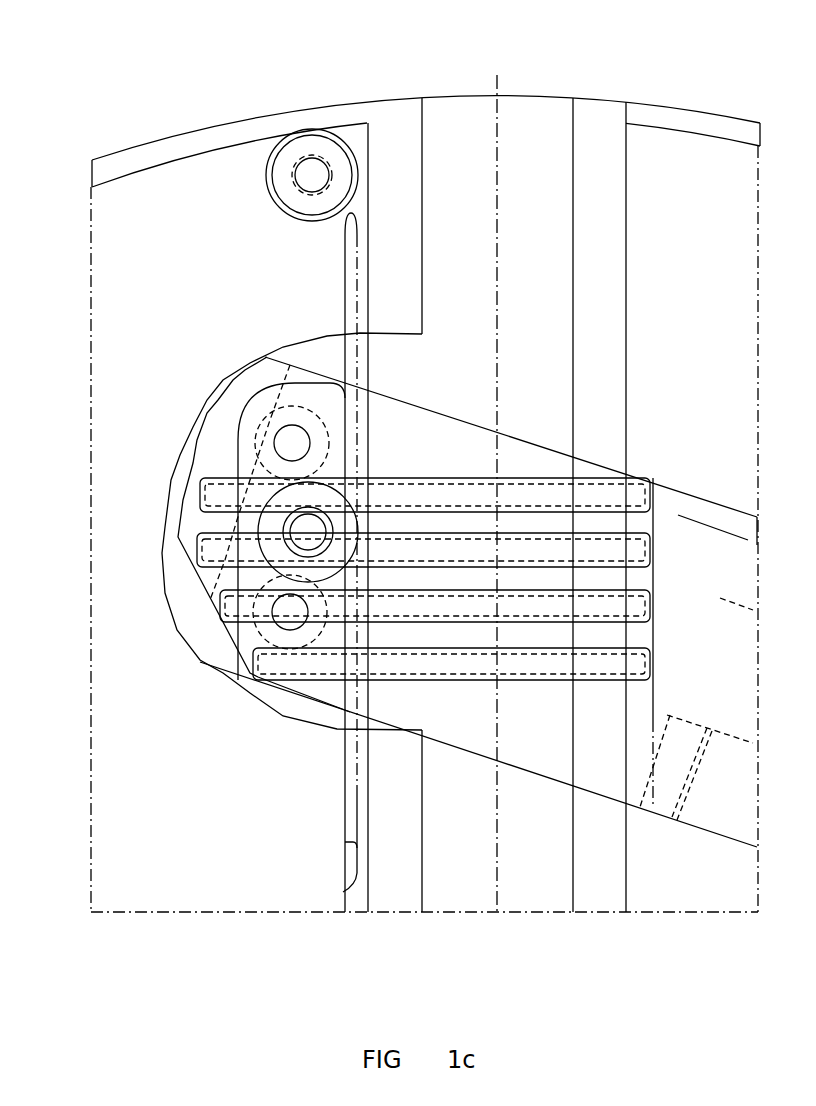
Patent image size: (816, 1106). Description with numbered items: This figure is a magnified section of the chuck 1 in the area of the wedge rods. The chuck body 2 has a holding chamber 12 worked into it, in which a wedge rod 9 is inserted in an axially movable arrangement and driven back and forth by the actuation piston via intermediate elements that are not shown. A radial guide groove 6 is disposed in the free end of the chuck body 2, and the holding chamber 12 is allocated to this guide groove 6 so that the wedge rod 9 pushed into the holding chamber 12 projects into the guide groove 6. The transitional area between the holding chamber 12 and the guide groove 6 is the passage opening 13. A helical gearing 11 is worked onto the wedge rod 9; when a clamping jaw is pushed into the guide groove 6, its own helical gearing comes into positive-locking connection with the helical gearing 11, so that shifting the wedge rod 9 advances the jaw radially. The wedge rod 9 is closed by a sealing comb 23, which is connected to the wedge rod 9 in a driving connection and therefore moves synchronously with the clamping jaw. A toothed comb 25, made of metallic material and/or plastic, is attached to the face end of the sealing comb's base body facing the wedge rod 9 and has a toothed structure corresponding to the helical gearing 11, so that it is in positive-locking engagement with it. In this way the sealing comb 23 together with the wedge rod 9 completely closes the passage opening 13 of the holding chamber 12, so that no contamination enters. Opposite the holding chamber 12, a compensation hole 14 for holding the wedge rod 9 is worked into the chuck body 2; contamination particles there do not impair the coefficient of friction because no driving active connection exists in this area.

The chuck 1 is at (727, 117).
The chuck body 2 is at (242, 119).
The guide groove 6 is at (626, 188).
The wedge rod 9 is at (523, 435).
The helical gearing 11 is at (403, 478).
The holding chamber 12 is at (192, 330).
The passage opening 13 is at (343, 470).
The compensation hole 14 is at (727, 835).
The sealing comb 23 is at (343, 290).
The toothed comb 25 is at (343, 842).